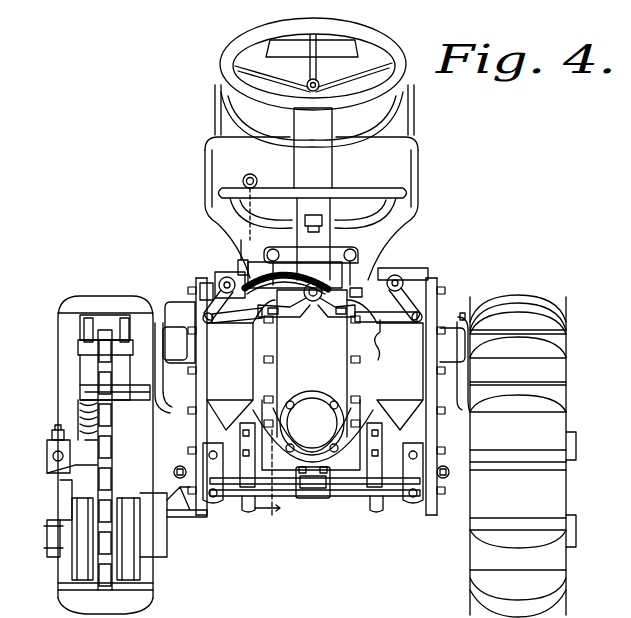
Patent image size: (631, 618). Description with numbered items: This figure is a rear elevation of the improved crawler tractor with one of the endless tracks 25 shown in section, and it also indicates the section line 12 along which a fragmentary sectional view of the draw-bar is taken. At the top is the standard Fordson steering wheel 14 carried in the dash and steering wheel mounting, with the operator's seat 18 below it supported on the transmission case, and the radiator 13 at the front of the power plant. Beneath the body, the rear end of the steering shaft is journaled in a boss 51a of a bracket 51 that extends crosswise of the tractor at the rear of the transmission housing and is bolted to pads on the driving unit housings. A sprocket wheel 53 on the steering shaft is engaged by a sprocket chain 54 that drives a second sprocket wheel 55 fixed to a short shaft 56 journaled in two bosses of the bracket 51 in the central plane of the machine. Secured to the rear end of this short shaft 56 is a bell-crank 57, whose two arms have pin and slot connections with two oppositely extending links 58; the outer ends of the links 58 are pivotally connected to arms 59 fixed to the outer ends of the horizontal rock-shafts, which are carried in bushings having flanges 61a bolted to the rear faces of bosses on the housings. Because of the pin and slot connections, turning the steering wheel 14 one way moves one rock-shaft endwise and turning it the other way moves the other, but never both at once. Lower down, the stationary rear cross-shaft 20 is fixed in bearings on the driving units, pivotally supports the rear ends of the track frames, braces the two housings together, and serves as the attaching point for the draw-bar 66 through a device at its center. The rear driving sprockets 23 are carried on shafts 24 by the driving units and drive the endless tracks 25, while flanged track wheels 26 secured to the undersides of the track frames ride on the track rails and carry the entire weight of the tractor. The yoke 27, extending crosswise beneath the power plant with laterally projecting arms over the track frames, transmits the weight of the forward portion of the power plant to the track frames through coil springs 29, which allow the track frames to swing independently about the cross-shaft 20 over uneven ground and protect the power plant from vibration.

The steering wheel 14 is at (372, 33).
The operator's seat 18 is at (378, 180).
The radiator 13 is at (418, 244).
The sprocket chain 54 is at (285, 270).
The sprocket wheel 53 is at (232, 272).
The boss 51a is at (200, 290).
The arms 59 is at (222, 285).
The links 58 is at (240, 320).
The second sprocket wheel 55 is at (300, 278).
The short shaft 56 is at (333, 290).
The bracket 51 is at (310, 300).
The bell-crank 57 is at (322, 306).
The flanges 61a is at (391, 340).
The rear cross-shaft 20 is at (357, 495).
The draw-bar 66 is at (320, 484).
The center line 12 is at (267, 481).
The endless tracks 25 is at (90, 300).
The rear driving sprockets 23 is at (98, 372).
The yoke 27 is at (85, 390).
The coil springs 29 is at (80, 420).
The shafts 24 is at (60, 475).
The flanged track wheels 26 is at (126, 560).